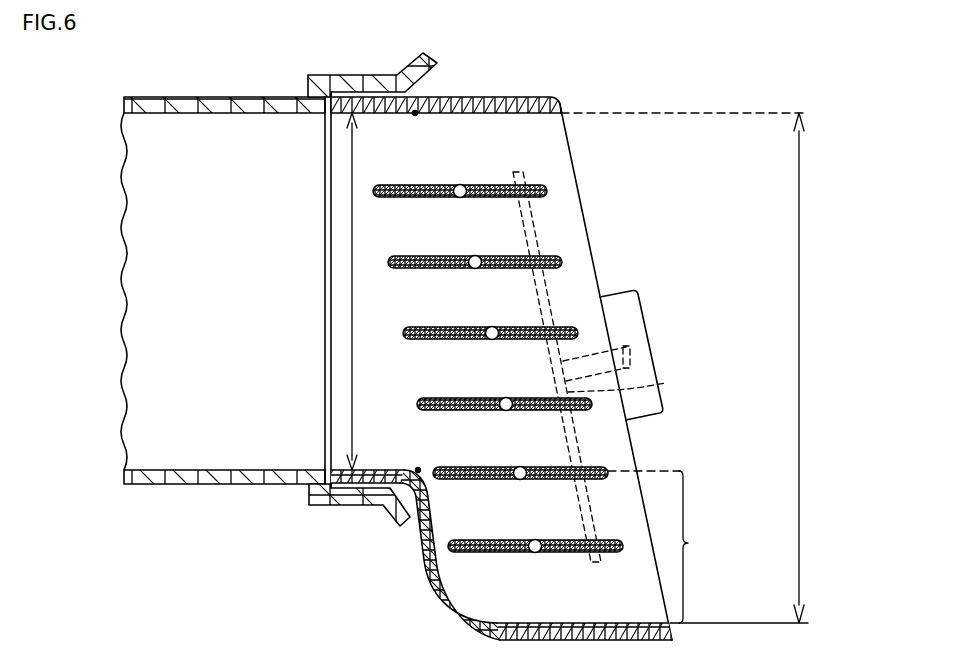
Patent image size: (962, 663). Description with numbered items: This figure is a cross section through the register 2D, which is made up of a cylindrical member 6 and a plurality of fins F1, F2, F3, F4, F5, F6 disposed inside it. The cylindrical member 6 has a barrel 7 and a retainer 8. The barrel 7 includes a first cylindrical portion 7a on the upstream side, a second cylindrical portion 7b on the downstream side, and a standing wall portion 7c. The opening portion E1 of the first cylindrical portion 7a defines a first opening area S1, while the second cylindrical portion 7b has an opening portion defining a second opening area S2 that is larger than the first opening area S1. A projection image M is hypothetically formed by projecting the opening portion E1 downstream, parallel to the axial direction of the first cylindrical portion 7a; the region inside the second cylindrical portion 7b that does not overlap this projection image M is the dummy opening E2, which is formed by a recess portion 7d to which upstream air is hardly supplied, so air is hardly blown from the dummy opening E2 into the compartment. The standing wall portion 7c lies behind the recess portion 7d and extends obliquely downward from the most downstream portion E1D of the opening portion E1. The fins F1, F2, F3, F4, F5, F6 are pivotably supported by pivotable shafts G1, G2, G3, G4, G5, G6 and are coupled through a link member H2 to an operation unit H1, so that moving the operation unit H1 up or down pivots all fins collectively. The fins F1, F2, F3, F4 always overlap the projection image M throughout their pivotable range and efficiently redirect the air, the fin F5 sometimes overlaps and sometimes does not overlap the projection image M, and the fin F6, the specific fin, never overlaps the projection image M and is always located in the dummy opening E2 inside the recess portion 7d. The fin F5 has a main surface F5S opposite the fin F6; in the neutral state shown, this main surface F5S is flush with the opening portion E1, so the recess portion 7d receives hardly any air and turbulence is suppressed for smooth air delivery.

The cylindrical member 6 is at (380, 42).
The barrel 7 is at (369, 95).
The first cylindrical portion 7a is at (358, 480).
The second cylindrical portion 7b is at (545, 625).
The standing wall portion 7c is at (432, 572).
The recess portion 7d is at (528, 522).
The retainer 8 is at (205, 104).
The register 2D is at (490, 327).
The most downstream portion of the opening portion E1D is at (416, 114).
The opening portion E1 is at (281, 303).
The dummy opening E2 is at (699, 547).
The first opening area S1 is at (352, 290).
The second opening area S2 is at (801, 360).
The projection image M is at (586, 116).
The fin F1 is at (404, 198).
The fin F2 is at (420, 269).
The fin F3 is at (435, 340).
The fin F4 is at (450, 411).
The fin F5 is at (462, 480).
The specific fin F6 is at (475, 553).
The main surface F5S is at (557, 466).
The pivotable shaft G1 is at (456, 185).
The pivotable shaft G2 is at (470, 256).
The pivotable shaft G3 is at (487, 327).
The pivotable shaft G4 is at (501, 398).
The pivotable shaft G5 is at (516, 467).
The pivotable shaft G6 is at (540, 553).
The operation unit H1 is at (640, 353).
The link member H2 is at (665, 383).